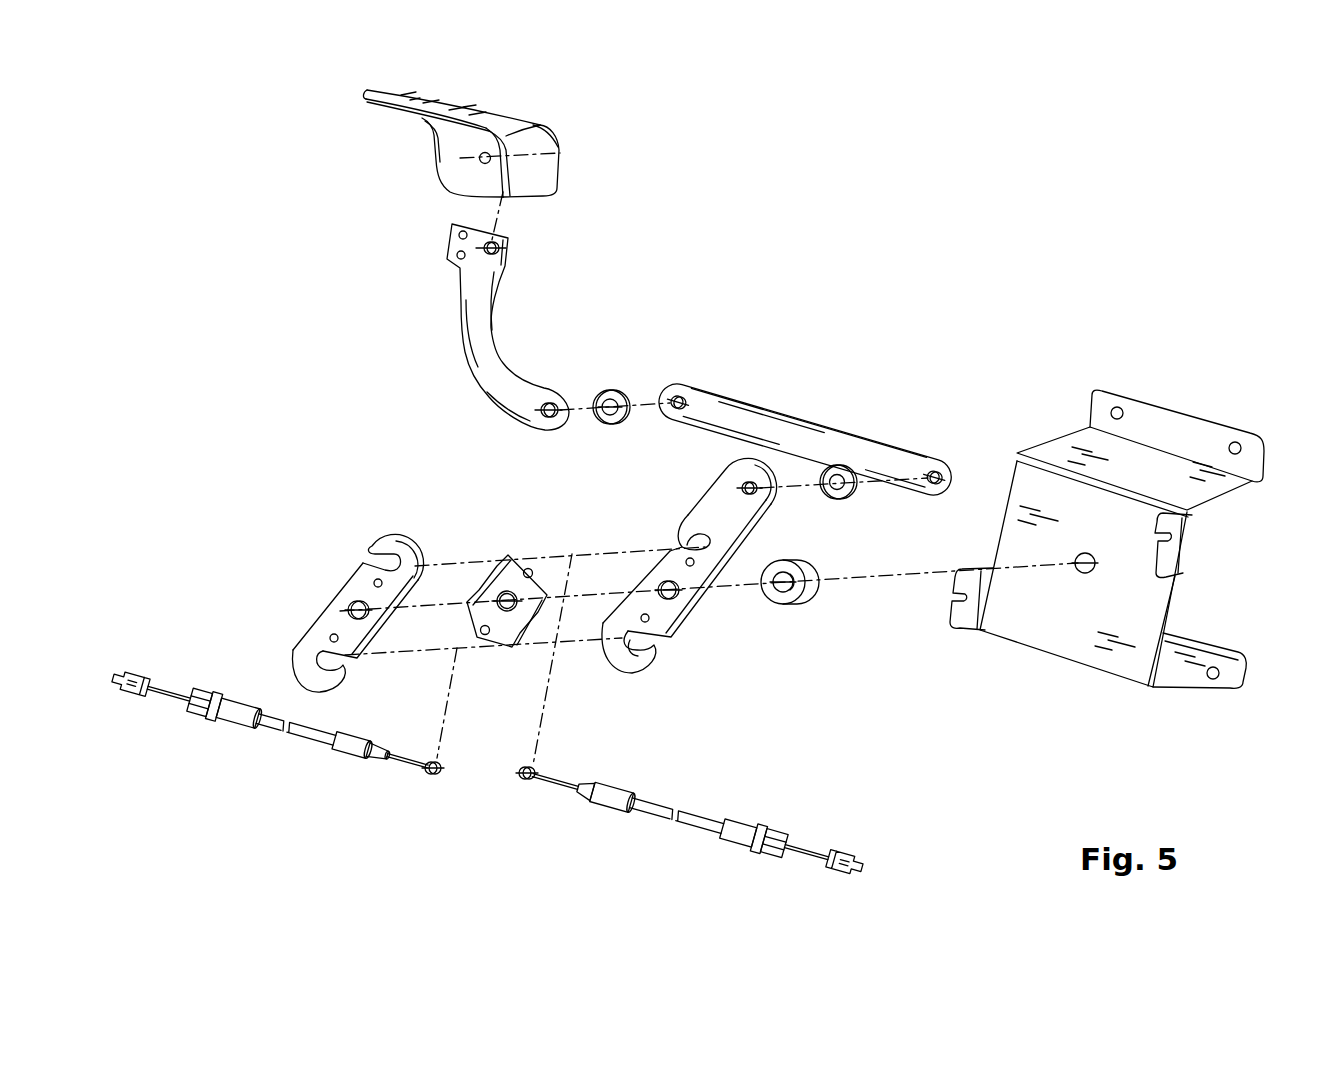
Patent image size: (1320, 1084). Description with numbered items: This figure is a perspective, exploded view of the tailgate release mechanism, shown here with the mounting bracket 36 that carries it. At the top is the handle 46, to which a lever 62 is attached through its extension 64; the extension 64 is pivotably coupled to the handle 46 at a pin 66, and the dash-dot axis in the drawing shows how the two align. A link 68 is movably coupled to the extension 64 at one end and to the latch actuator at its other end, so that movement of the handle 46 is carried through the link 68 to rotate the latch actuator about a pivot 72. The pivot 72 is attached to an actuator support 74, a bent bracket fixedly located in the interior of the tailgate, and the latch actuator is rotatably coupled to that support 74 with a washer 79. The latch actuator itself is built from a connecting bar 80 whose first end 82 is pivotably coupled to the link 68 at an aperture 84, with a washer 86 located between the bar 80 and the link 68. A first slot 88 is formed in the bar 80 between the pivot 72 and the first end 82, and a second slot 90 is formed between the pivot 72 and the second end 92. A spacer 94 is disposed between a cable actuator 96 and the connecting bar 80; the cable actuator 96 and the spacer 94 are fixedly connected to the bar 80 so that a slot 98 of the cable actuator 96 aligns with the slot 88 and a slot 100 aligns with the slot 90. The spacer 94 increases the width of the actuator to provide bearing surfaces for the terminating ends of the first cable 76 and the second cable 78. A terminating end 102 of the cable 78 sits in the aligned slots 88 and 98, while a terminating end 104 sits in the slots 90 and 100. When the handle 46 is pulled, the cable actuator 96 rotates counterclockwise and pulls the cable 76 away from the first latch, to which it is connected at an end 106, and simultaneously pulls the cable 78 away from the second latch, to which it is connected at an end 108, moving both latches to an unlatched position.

The mounting bracket 36 is at (807, 659).
The handle 46 is at (540, 135).
The lever 62 is at (686, 314).
The extension 64 is at (463, 323).
The pin 66 is at (482, 163).
The link 68 is at (817, 433).
The pivot 72 is at (676, 594).
The actuator support 74 is at (1213, 690).
The first cable 76 is at (273, 733).
The second cable 78 is at (657, 820).
The washer 79 is at (818, 590).
The connecting bar 80 is at (710, 517).
The first end 82 is at (732, 472).
The aperture 84 is at (756, 491).
The washer 86 is at (852, 490).
The first slot 88 is at (688, 548).
The second slot 90 is at (653, 648).
The second end 92 is at (623, 664).
The spacer 94 is at (498, 588).
The cable actuator 96 is at (328, 613).
The slot 98 is at (374, 560).
The slot 100 is at (346, 664).
The terminating end 102 is at (520, 782).
The terminating end 104 is at (437, 782).
The end 106 is at (127, 693).
The end 108 is at (865, 873).